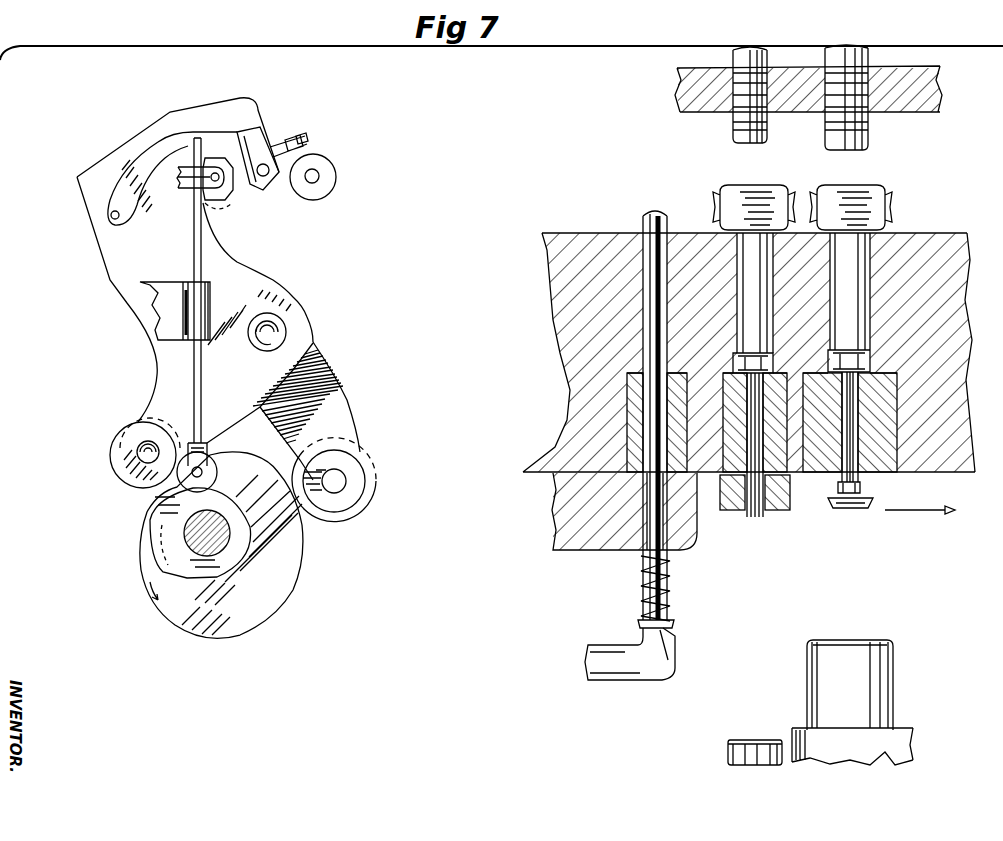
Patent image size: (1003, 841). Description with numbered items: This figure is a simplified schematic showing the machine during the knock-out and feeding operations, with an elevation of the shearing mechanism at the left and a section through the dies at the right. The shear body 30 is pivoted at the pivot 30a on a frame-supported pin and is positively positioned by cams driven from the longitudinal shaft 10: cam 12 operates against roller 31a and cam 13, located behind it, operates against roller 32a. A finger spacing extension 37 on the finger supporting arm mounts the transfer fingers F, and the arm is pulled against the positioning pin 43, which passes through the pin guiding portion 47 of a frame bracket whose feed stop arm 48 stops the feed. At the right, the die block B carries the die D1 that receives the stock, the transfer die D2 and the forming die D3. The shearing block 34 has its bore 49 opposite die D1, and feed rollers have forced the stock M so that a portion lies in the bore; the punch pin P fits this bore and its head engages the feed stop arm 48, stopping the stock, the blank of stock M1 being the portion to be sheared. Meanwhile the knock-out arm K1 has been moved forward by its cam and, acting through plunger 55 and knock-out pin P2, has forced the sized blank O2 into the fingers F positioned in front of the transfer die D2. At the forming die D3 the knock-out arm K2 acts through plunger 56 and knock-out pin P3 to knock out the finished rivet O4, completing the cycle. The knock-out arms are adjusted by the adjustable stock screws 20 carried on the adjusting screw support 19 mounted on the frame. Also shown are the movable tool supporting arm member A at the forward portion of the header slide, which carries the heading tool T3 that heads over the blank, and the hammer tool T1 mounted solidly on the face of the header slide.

The shear body 30 is at (132, 260).
The finger spacing extension 37 is at (213, 113).
The positioning pin 43 is at (201, 392).
The shearing block 34 is at (212, 165).
The feed stop arm 48 is at (183, 185).
The pin guiding portion 47 is at (213, 300).
The pivot 30a is at (281, 341).
The roller 32a is at (368, 468).
The roller 31a is at (115, 456).
The cam 13 is at (253, 476).
The cam 12 is at (255, 620).
The longitudinal shaft 10 is at (223, 537).
The transfer fingers F is at (260, 132).
The die D1 is at (628, 432).
The transfer die D2 is at (267, 178).
The forming die D3 is at (320, 190).
The sized blank O2 is at (312, 142).
The rivet O4 is at (320, 170).
The adjusting screw support 19 is at (923, 98).
The adjustable stock screws 20 is at (827, 127).
The knock-out arm K1 is at (755, 197).
The knock-out arm K2 is at (857, 198).
The die block B is at (557, 303).
The stock M is at (643, 300).
The blank of stock M1 is at (650, 490).
The bore 49 is at (647, 500).
The plunger 55 is at (773, 292).
The plunger 56 is at (872, 285).
The knock-out pin P2 is at (757, 443).
The knock-out pin P3 is at (860, 438).
The punch pin P is at (663, 602).
The heading tool T3 is at (850, 685).
The movable tool supporting arm member A is at (885, 752).
The hammer tool T1 is at (768, 740).